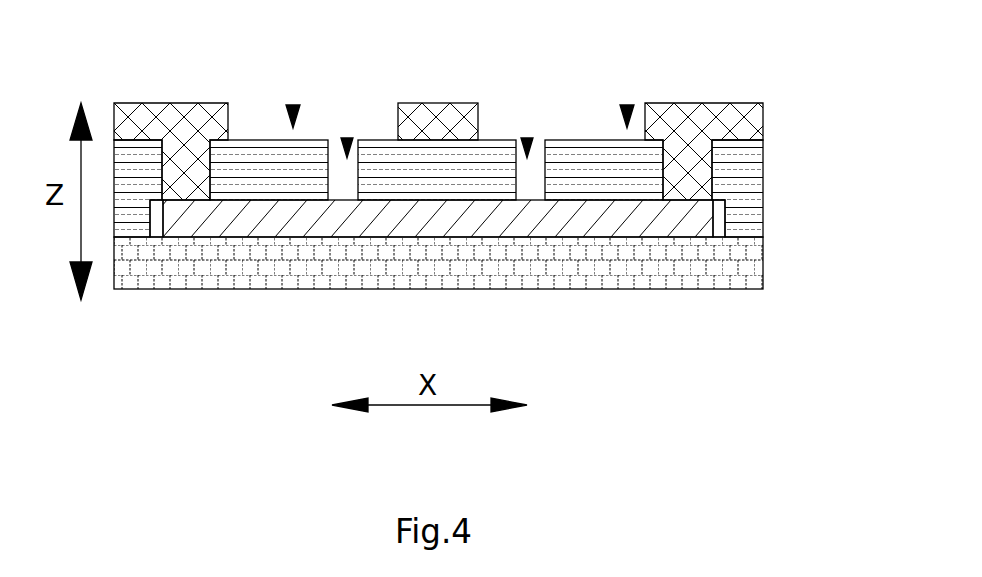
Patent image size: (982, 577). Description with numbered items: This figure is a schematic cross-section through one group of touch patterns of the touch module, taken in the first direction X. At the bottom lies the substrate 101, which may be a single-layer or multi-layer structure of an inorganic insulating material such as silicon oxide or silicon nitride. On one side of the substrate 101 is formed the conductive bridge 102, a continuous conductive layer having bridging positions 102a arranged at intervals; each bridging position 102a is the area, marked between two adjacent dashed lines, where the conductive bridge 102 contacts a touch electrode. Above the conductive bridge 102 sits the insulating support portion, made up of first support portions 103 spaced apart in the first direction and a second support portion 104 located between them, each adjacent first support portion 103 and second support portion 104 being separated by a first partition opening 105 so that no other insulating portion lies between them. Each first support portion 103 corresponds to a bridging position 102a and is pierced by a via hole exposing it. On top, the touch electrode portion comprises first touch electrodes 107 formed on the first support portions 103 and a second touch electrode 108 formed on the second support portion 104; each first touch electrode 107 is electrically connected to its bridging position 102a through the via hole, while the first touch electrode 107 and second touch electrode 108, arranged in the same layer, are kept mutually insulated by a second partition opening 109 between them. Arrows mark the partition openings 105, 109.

The substrate 101 is at (757, 273).
The conductive bridge 102 is at (372, 222).
The bridging position 102a is at (190, 202).
The first support portion 103 is at (252, 155).
The second support portion 104 is at (488, 150).
The first partition opening 105 is at (345, 138).
The first touch electrode 107 is at (180, 110).
The second touch electrode 108 is at (440, 108).
The second partition opening 109 is at (293, 105).